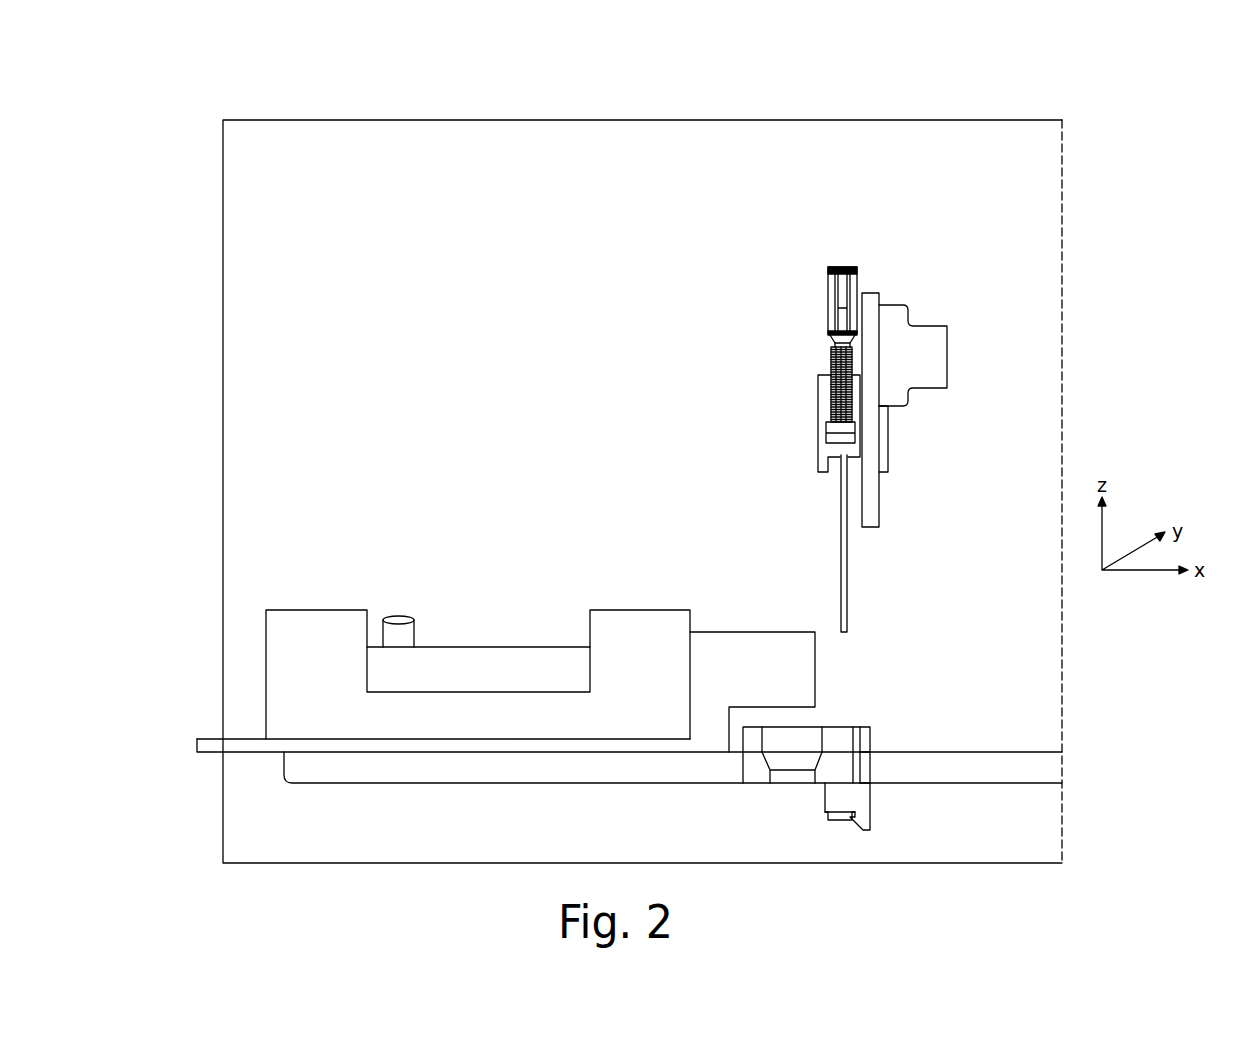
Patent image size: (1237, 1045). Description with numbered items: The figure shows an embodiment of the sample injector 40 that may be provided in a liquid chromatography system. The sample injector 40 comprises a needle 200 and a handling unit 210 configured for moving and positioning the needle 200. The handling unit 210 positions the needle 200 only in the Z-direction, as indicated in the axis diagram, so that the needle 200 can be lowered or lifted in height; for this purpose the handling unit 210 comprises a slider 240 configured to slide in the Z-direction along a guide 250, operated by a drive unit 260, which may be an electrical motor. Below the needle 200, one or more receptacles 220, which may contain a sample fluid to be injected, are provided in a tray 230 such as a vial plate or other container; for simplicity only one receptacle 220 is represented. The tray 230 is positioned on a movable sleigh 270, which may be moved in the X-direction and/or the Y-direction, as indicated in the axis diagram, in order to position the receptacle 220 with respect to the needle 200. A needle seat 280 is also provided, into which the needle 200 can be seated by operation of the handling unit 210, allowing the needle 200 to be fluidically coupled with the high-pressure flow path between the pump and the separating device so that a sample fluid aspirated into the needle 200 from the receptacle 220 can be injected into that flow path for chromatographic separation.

The sample injector 40 is at (668, 138).
The needle 200 is at (848, 570).
The handling unit 210 is at (852, 366).
The receptacle 220 is at (400, 616).
The tray 230 is at (639, 622).
The slider 240 is at (823, 435).
The guide 250 is at (873, 305).
The drive unit 260 is at (928, 333).
The movable sleigh 270 is at (735, 645).
The needle seat 280 is at (830, 763).